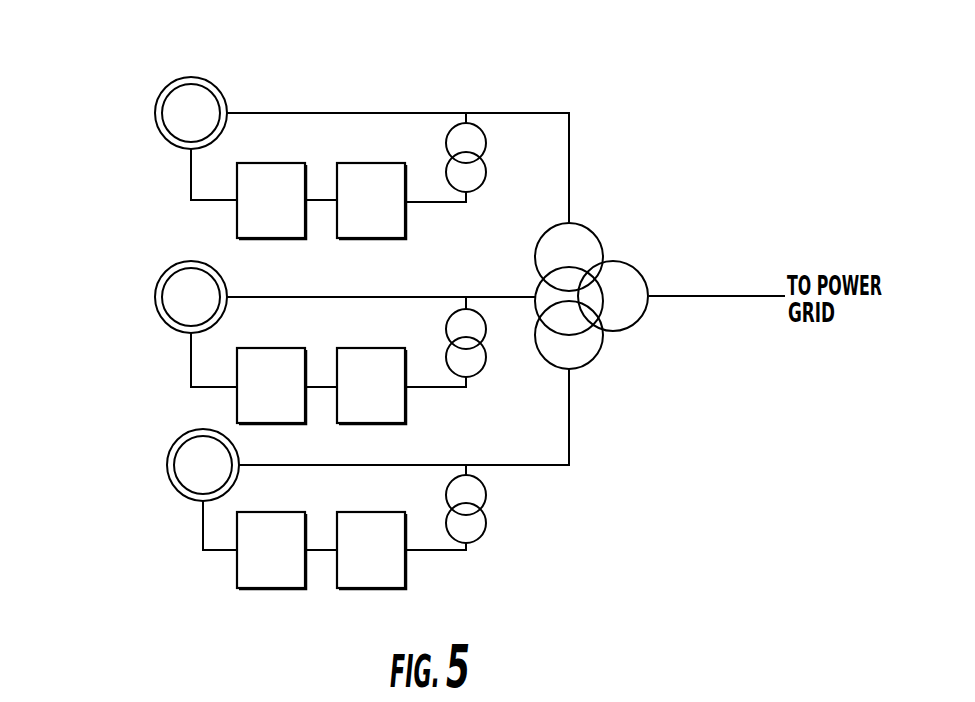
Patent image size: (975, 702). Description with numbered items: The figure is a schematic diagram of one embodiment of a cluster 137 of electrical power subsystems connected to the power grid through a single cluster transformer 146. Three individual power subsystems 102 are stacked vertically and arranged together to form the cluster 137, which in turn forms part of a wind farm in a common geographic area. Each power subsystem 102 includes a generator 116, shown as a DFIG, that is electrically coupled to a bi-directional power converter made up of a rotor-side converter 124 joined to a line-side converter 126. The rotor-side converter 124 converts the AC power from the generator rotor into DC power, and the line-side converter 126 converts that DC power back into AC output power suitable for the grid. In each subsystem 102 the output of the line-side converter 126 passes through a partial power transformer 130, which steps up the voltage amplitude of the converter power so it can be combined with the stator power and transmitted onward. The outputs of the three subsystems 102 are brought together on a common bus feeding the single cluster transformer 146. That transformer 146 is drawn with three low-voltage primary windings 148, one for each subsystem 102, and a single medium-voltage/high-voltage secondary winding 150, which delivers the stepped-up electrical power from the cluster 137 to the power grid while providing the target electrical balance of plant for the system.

The cluster 137 is at (76, 116).
The generator 116 is at (164, 81).
The power subsystem 102 is at (180, 179).
The rotor-side converter 124 is at (288, 214).
The line-side converter 126 is at (388, 214).
The partial power transformer 130 is at (494, 172).
The single cluster transformer 146 is at (597, 305).
The low-voltage primary windings 148 is at (534, 328).
The medium-voltage/high-voltage secondary winding 150 is at (633, 266).